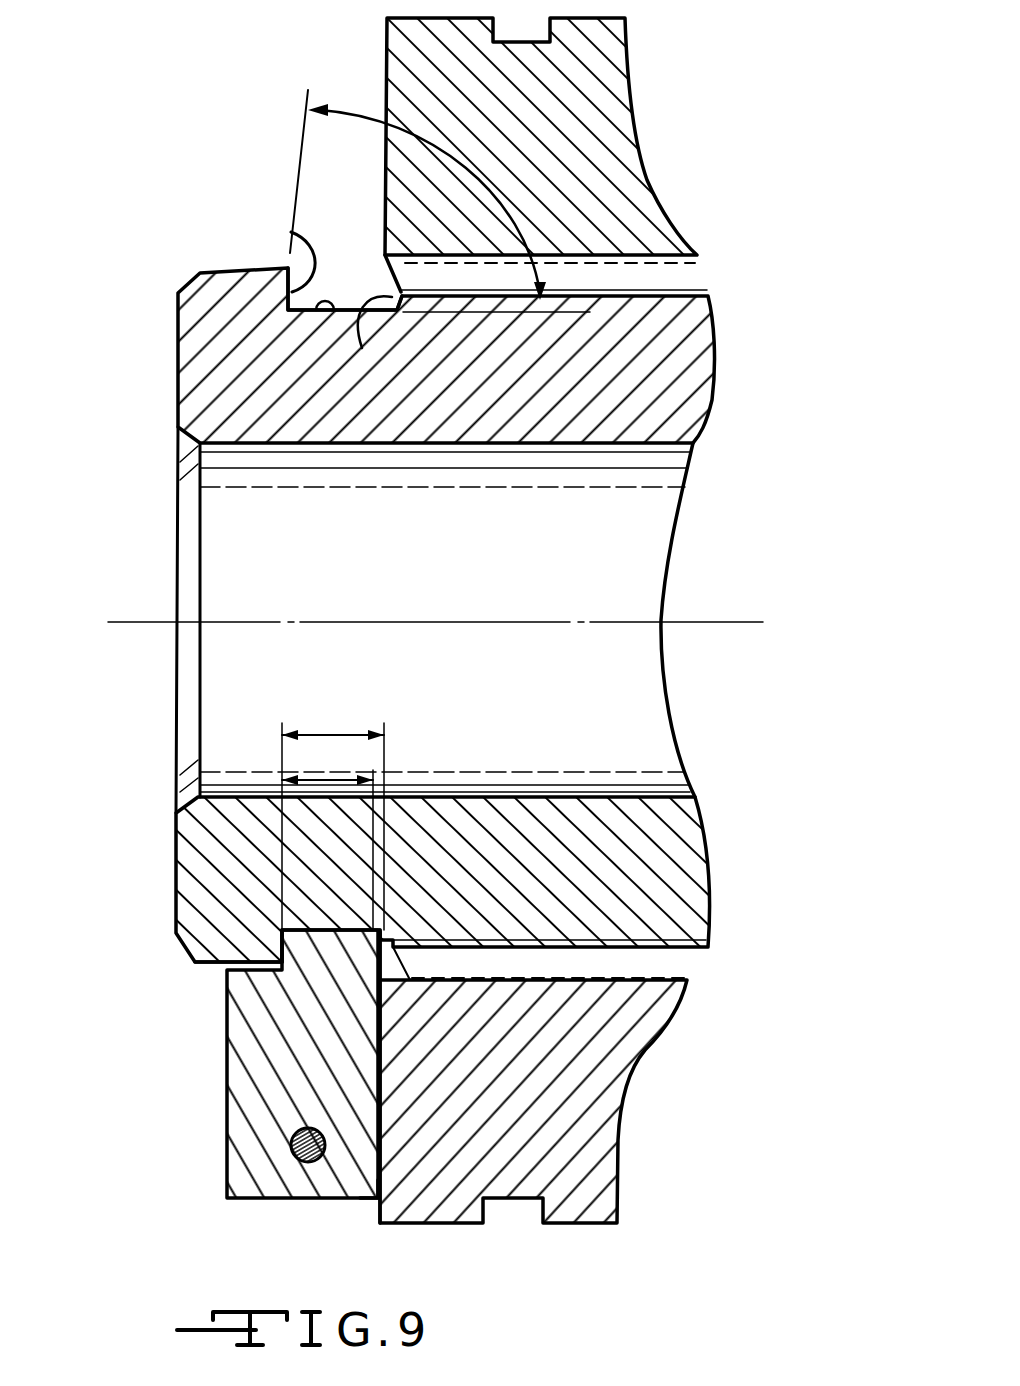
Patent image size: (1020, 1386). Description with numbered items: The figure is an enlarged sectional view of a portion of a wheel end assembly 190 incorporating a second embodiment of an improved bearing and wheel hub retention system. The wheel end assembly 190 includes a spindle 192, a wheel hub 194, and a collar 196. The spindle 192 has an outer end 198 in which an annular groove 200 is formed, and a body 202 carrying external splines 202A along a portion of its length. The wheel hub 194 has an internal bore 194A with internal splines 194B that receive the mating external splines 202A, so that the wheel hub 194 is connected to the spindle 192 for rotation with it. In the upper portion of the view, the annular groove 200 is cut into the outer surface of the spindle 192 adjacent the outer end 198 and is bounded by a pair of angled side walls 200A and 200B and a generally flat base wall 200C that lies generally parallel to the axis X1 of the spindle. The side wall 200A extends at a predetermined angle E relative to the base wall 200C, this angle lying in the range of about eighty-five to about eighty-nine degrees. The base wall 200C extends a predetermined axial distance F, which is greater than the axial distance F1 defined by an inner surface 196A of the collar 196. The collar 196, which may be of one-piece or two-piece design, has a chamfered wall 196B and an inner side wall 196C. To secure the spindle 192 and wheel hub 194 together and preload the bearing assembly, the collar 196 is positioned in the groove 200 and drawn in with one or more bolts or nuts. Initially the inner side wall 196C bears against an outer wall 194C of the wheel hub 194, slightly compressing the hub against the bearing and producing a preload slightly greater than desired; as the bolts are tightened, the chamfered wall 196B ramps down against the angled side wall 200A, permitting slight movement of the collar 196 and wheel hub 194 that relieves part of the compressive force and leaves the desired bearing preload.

The wheel end assembly 190 is at (125, 205).
The spindle 192 is at (498, 787).
The wheel hub 194 is at (450, 1230).
The internal bore 194A is at (668, 978).
The internal splines 194B is at (425, 960).
The outer wall 194C is at (377, 1043).
The collar 196 is at (215, 1122).
The inner surface 196A is at (313, 928).
The chamfered wall 196B is at (284, 943).
The inner side wall 196C is at (377, 1205).
The outer end 198 is at (178, 393).
The annular groove 200 is at (330, 237).
The angled side wall 200A is at (296, 255).
The angled side wall 200B is at (403, 332).
The base wall 200C is at (292, 334).
The body 202 is at (447, 433).
The external splines 202A is at (667, 278).
The axis X1 is at (688, 610).
The angle E is at (470, 183).
The axial distance F is at (333, 733).
The axial distance F1 is at (320, 775).